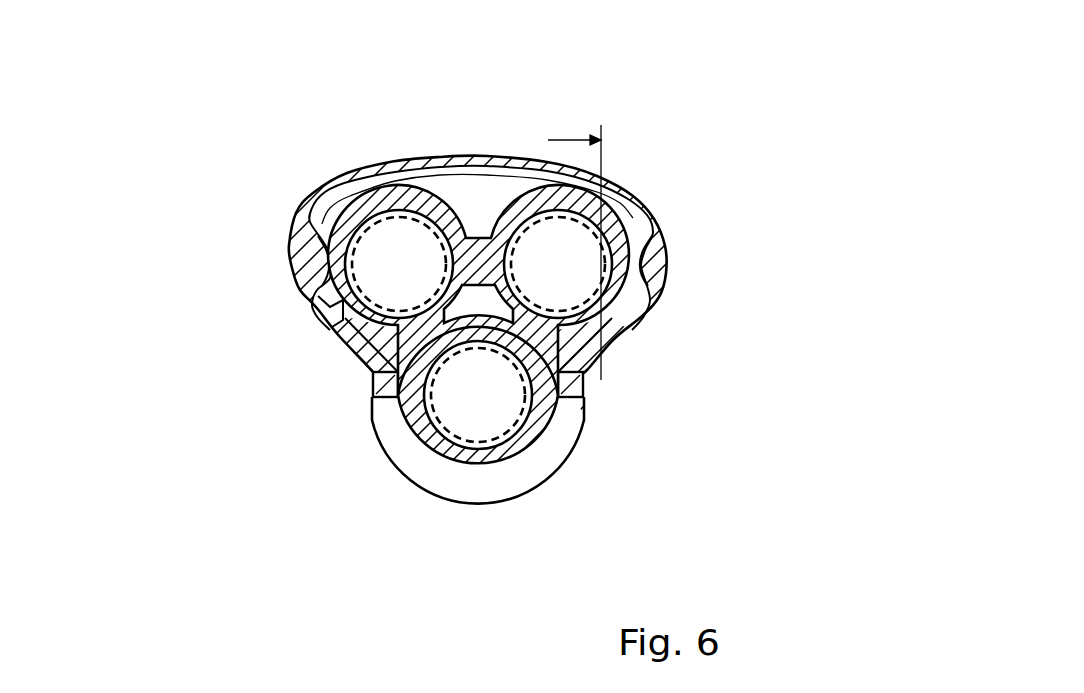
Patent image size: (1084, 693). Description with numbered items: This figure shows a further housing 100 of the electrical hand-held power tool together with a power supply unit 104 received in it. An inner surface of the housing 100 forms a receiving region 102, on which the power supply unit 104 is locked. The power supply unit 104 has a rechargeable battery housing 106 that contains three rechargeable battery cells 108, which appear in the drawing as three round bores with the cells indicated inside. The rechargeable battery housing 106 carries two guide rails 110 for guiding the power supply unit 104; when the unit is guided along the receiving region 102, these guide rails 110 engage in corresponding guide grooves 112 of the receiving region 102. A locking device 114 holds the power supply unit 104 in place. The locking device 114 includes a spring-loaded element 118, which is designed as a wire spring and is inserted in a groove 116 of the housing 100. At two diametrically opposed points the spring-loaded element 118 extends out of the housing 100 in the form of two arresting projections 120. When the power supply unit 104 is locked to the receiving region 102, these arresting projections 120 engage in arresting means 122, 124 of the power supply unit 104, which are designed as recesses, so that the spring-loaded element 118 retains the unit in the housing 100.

The housing 100 is at (638, 185).
The receiving region 102 is at (515, 400).
The power supply unit 104 is at (535, 339).
The rechargeable battery housing 106 is at (425, 480).
The rechargeable battery cells 108 is at (503, 405).
The guide rails 110 is at (377, 410).
The guide grooves 112 is at (365, 355).
The locking device 114 is at (680, 253).
The groove 116 is at (455, 185).
The spring-loaded element 118 is at (382, 157).
The arresting projections 120 is at (330, 253).
The arresting means 122 is at (330, 259).
The arresting means 124 is at (633, 253).